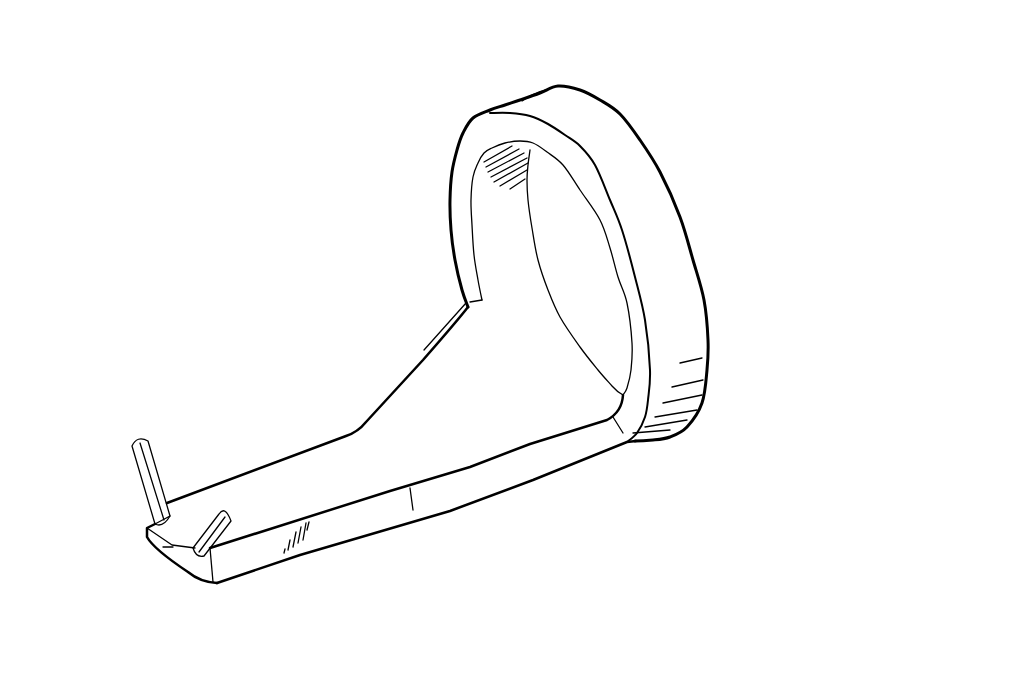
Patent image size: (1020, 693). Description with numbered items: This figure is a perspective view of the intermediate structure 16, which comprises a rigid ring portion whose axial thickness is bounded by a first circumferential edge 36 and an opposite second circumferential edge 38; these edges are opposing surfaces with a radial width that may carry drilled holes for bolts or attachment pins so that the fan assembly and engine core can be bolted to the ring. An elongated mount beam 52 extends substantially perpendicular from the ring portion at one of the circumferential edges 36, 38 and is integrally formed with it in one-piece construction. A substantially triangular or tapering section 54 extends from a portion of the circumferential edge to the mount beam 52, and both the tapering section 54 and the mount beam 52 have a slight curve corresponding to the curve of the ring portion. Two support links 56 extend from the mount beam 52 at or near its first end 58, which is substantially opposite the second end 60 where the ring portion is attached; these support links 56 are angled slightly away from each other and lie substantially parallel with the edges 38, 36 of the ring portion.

The intermediate structure 16 is at (316, 208).
The first circumferential edge 36 is at (614, 112).
The second circumferential edge 38 is at (478, 135).
The mount beam 52 is at (300, 483).
The substantially triangular or tapering section 54 is at (510, 438).
The support links 56 is at (148, 443).
The first end 58 is at (173, 547).
The second end 60 is at (482, 300).